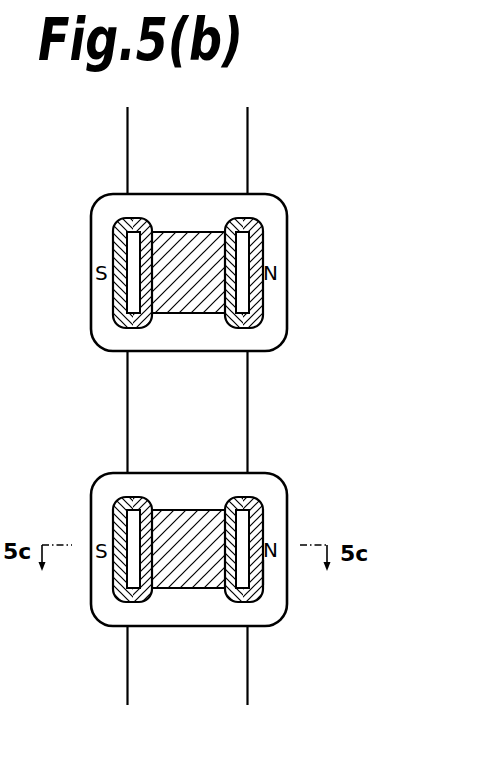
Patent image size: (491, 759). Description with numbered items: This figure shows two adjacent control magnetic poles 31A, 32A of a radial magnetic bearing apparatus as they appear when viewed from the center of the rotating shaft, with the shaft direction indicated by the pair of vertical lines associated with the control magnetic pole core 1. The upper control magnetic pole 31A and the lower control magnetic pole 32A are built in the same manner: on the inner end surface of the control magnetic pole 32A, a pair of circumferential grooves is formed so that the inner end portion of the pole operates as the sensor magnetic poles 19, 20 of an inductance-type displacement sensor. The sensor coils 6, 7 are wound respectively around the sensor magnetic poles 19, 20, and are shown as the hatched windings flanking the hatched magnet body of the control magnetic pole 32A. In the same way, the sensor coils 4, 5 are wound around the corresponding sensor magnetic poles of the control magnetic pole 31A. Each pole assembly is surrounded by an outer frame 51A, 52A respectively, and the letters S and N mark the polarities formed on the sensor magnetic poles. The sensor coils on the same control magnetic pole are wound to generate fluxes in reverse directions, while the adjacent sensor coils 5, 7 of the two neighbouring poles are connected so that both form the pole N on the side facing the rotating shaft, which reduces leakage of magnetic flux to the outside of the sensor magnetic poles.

The control magnetic pole core 1 is at (207, 688).
The sensor coil 4 is at (115, 230).
The sensor coil 5 is at (248, 220).
The sensor coil 6 is at (113, 578).
The sensor coil 7 is at (250, 603).
The sensor magnetic pole 19 is at (131, 593).
The sensor magnetic pole 20 is at (264, 574).
The control magnetic pole 31A is at (188, 234).
The control magnetic pole 32A is at (172, 592).
The upper yoke 51A is at (90, 322).
The lower yoke 52A is at (90, 510).